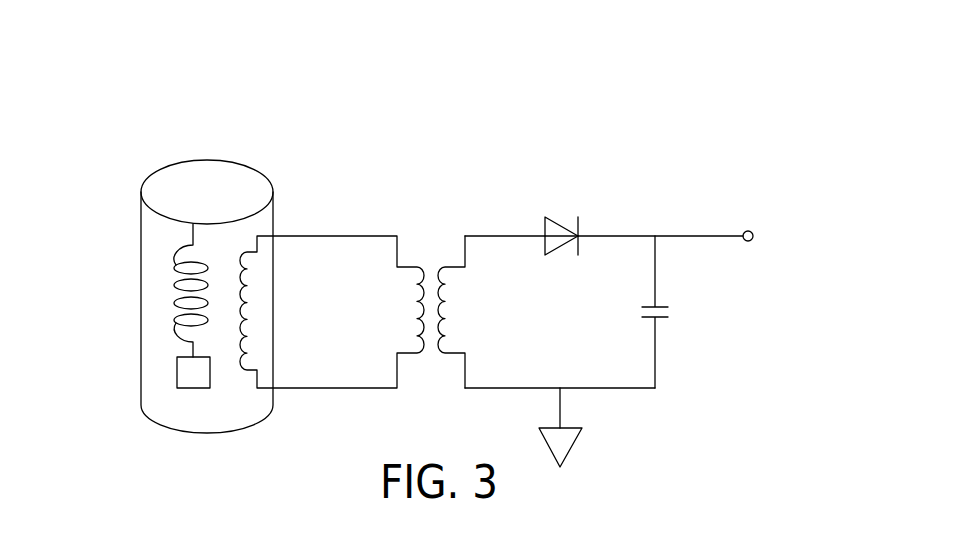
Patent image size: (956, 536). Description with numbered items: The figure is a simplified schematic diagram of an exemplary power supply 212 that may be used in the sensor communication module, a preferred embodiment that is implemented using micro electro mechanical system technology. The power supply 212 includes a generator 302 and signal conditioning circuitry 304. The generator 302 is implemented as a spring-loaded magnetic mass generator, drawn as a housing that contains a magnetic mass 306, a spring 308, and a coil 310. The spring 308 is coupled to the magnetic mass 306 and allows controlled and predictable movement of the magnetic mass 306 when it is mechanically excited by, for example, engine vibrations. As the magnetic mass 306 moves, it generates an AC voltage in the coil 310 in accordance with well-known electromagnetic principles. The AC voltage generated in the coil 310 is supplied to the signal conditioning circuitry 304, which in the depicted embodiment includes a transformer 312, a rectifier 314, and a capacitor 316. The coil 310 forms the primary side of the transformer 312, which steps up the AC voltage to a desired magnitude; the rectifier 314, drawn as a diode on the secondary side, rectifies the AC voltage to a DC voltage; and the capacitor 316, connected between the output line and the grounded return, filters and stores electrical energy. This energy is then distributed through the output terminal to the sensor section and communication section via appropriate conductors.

The power supply 212 is at (707, 118).
The generator 302 is at (143, 158).
The signal conditioning circuitry 304 is at (572, 208).
The magnetic mass 306 is at (187, 370).
The spring 308 is at (171, 275).
The coil 310 is at (245, 320).
The transformer 312 is at (432, 253).
The rectifier 314 is at (557, 255).
The capacitor 316 is at (660, 318).